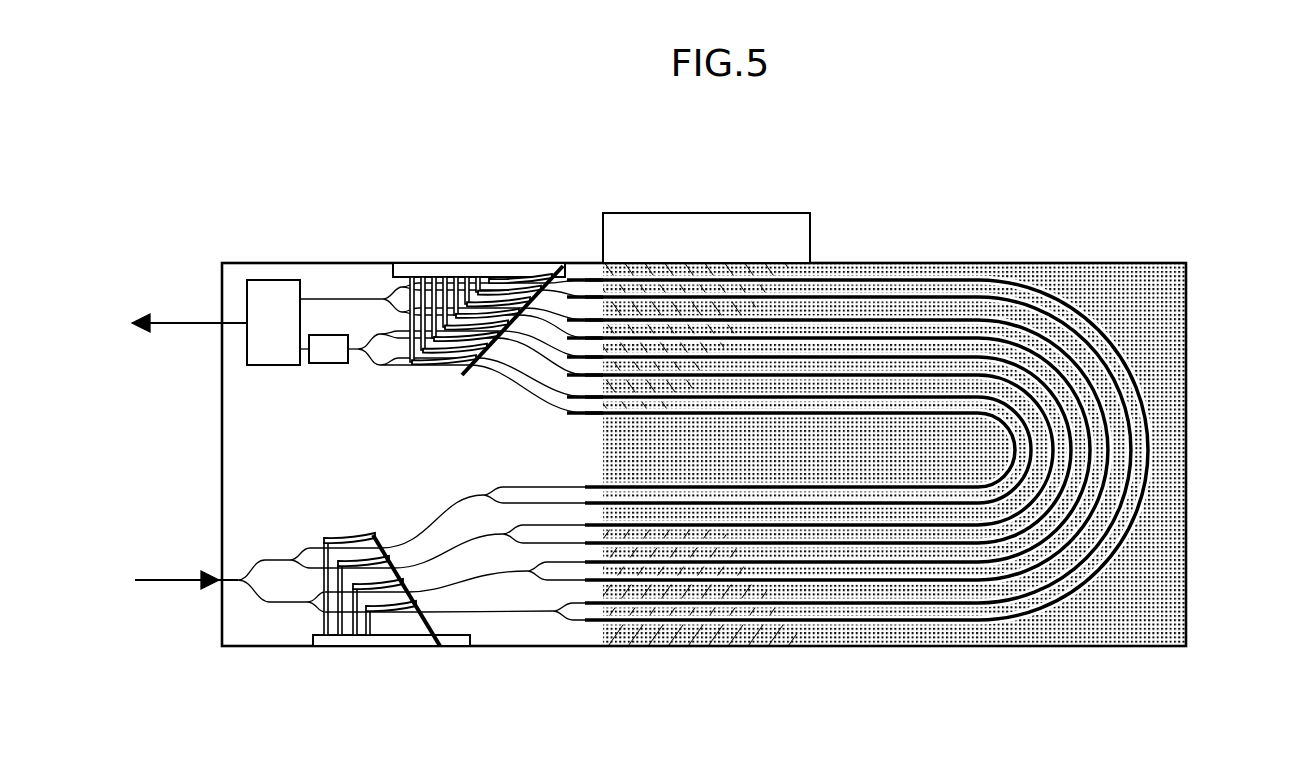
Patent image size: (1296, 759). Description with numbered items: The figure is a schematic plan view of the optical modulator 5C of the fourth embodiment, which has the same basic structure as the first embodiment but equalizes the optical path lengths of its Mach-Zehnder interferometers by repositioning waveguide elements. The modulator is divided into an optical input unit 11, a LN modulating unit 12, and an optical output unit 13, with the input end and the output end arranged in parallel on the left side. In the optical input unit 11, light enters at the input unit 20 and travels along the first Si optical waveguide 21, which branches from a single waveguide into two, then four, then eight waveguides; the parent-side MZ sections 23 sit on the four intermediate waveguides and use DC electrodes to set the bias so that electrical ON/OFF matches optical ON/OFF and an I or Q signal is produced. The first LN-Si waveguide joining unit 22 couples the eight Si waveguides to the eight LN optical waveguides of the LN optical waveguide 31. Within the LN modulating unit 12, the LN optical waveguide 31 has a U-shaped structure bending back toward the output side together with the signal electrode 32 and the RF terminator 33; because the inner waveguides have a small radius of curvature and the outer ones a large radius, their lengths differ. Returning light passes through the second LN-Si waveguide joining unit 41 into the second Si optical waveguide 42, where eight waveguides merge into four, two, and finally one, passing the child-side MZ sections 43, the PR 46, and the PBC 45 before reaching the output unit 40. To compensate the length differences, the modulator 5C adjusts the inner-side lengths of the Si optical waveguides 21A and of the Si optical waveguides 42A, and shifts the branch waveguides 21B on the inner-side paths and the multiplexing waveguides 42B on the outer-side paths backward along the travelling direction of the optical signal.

The optical modulator 5C is at (214, 184).
The optical input unit 11 is at (603, 683).
The LN modulating unit 12 is at (1200, 265).
The optical output unit 13 is at (600, 257).
The input unit 20 is at (213, 605).
The first Si optical waveguide 21 is at (272, 556).
The Si optical waveguides 21A is at (410, 520).
The branch waveguides 21B is at (548, 620).
The first LN-Si waveguide joining unit 22 is at (565, 617).
The parent-side Mach-Zehnder sections 23 is at (398, 620).
The LN optical waveguide 31 is at (1007, 280).
The signal electrode 32 is at (895, 274).
The RF terminator 33 is at (706, 199).
The output unit 40 is at (220, 323).
The second LN-Si waveguide joining unit 41 is at (575, 418).
The second Si optical waveguide 42 is at (388, 367).
The Si optical waveguides 42A is at (500, 400).
The multiplexing waveguides 42B is at (400, 287).
The child-side Mach-Zehnder sections 43 is at (505, 272).
The PBC 45 is at (283, 366).
The PR 46 is at (340, 364).